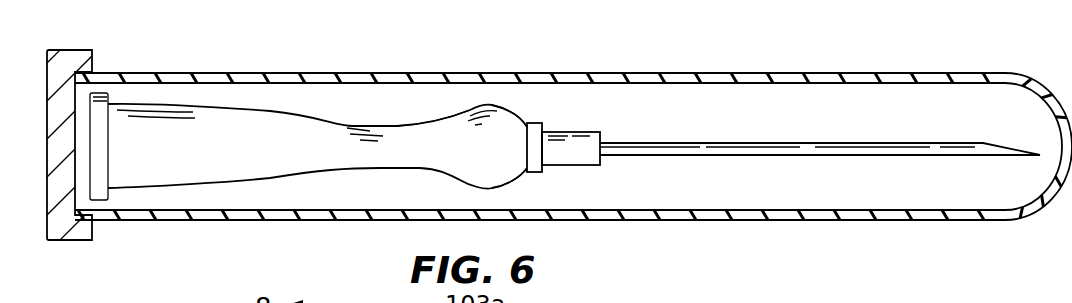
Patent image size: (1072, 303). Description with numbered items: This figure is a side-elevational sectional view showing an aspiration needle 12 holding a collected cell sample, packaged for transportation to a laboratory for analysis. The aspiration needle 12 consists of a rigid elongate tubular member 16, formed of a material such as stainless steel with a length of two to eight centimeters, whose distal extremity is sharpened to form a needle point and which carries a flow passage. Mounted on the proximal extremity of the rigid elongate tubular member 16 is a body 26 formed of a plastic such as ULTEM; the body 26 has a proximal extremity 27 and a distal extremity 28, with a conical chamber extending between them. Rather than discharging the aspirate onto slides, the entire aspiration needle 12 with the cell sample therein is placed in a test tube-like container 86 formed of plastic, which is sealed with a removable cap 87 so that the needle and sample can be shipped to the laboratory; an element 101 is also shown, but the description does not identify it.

The test tube-like container 86 is at (798, 73).
The removable cap 87 is at (82, 60).
The plug / spacer 101 is at (357, 47).
The proximal extremity 27 is at (155, 125).
The body 26 is at (294, 110).
The aspiration needle 12 is at (442, 100).
The distal extremity 28 is at (510, 122).
The rigid elongate tubular member 16 is at (741, 143).